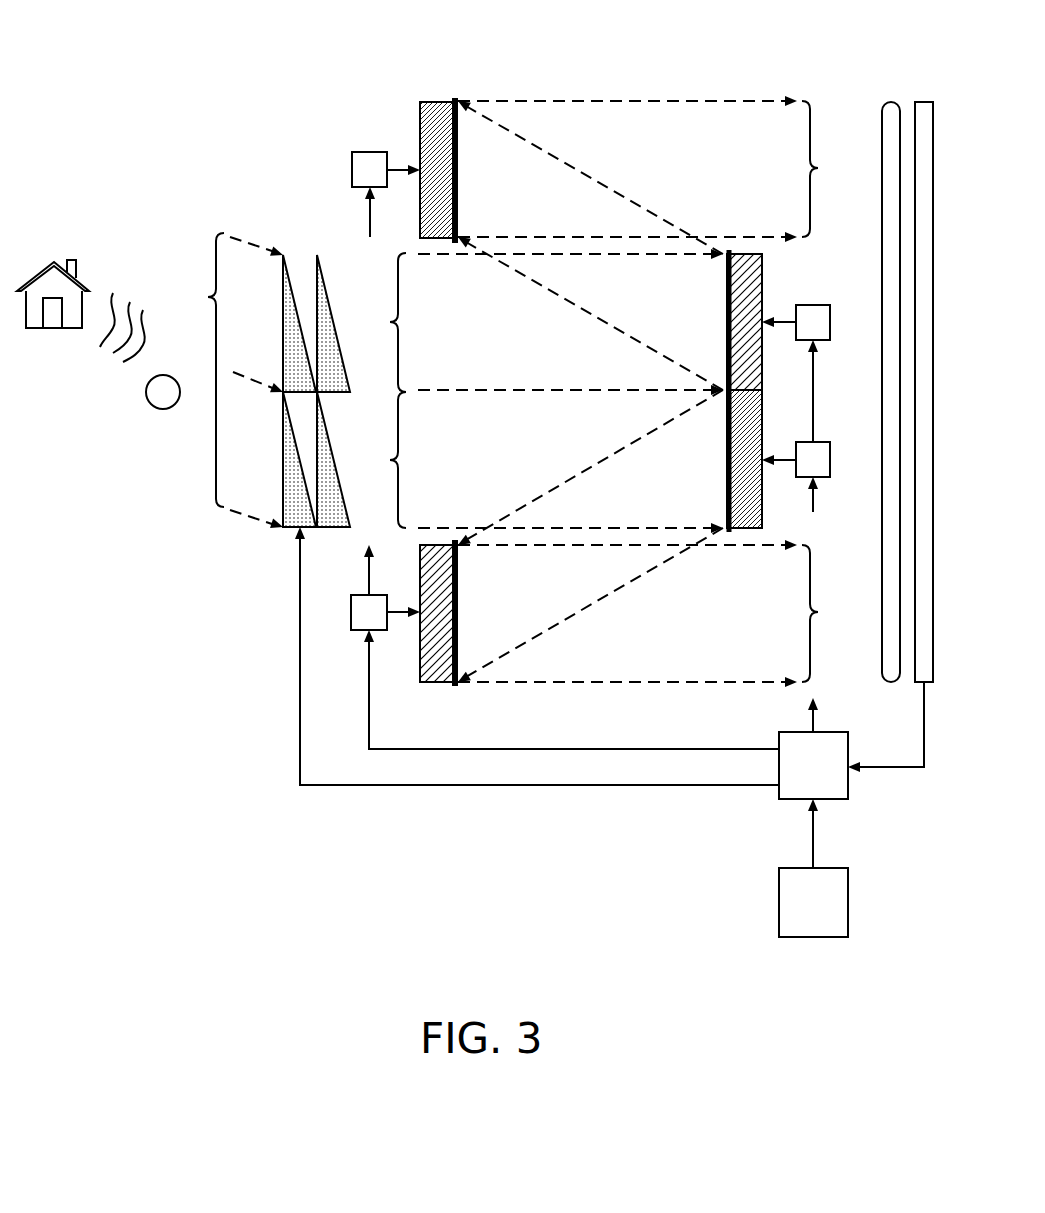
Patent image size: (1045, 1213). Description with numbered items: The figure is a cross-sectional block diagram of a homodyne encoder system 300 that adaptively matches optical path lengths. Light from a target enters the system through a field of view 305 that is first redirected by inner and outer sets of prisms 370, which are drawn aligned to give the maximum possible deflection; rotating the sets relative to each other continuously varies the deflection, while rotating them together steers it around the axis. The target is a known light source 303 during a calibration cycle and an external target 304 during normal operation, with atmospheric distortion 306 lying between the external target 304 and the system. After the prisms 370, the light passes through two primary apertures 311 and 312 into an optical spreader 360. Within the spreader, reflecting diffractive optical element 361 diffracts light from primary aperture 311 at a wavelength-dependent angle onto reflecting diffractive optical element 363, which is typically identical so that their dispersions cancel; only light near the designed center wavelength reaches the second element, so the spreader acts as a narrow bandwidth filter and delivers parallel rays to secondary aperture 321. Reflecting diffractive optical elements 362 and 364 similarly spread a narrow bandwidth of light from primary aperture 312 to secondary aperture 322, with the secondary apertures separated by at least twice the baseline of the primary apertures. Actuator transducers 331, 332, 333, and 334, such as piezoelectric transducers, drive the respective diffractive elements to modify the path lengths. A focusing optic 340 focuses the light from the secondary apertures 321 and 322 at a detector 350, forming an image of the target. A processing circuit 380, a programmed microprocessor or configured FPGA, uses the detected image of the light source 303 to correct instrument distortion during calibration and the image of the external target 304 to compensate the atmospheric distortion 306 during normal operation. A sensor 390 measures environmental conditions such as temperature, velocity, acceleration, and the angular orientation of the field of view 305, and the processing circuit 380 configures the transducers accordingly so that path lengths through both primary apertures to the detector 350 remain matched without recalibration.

The homodyne encoder system 300 is at (160, 120).
The light source 303 is at (163, 375).
The external target 304 is at (70, 328).
The field of view 305 is at (229, 382).
The atmospheric distortion 306 is at (113, 293).
The primary aperture 311 is at (539, 322).
The primary aperture 312 is at (539, 462).
The secondary aperture 321 is at (656, 169).
The secondary aperture 322 is at (656, 613).
The actuator transducer 331 is at (830, 322).
The actuator transducer 332 is at (830, 460).
The actuator transducer 333 is at (352, 170).
The actuator transducer 334 is at (351, 612).
The focusing optic 340 is at (891, 102).
The detector 350 is at (924, 102).
The optical spreader 360 is at (332, 119).
The reflecting diffractive optical element 361 is at (727, 322).
The reflecting diffractive optical element 362 is at (727, 460).
The reflecting diffractive optical element 363 is at (457, 170).
The reflecting diffractive optical element 364 is at (457, 612).
The prisms 370 is at (298, 246).
The processing circuit 380 is at (786, 732).
The sensor 390 is at (786, 868).